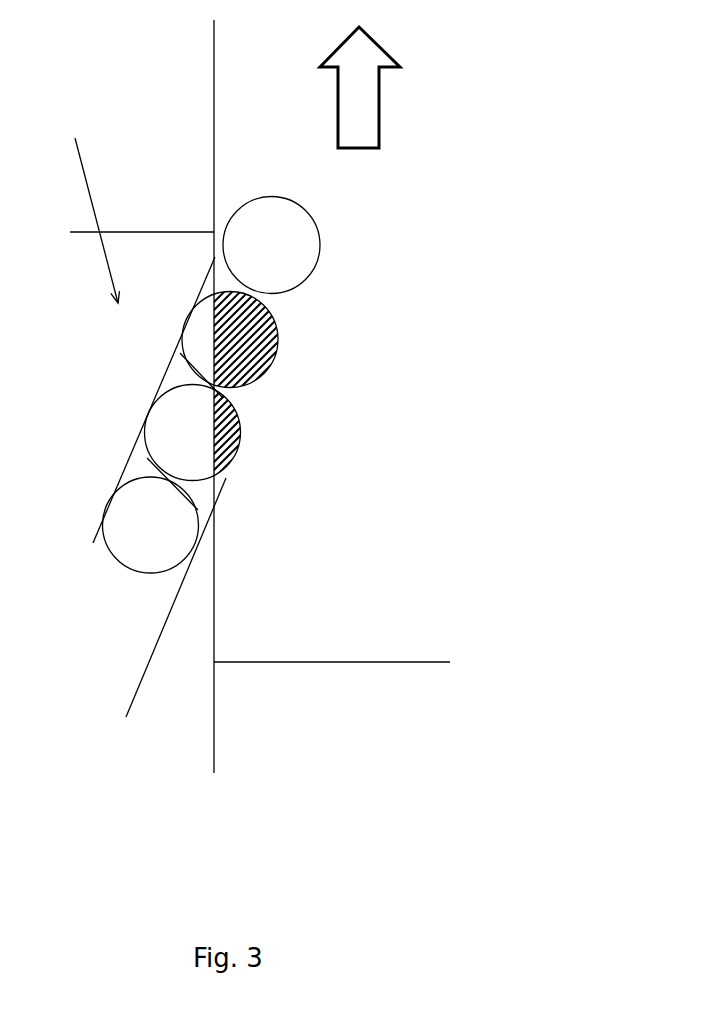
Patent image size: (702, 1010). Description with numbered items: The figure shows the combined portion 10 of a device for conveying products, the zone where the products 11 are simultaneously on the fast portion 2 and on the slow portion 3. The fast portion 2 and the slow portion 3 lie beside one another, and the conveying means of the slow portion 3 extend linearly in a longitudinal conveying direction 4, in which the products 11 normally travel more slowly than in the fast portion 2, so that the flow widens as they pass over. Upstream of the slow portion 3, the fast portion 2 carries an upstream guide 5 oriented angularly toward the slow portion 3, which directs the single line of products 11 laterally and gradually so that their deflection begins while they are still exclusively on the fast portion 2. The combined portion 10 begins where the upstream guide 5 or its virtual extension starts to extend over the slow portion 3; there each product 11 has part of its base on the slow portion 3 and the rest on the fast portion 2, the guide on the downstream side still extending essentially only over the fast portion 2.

The fast portion 2 is at (81, 190).
The slow portion 3 is at (343, 230).
The conveying direction 4 is at (358, 97).
The upstream guide 5 is at (162, 630).
The combined portion 10 is at (247, 410).
The product 11 is at (167, 515).